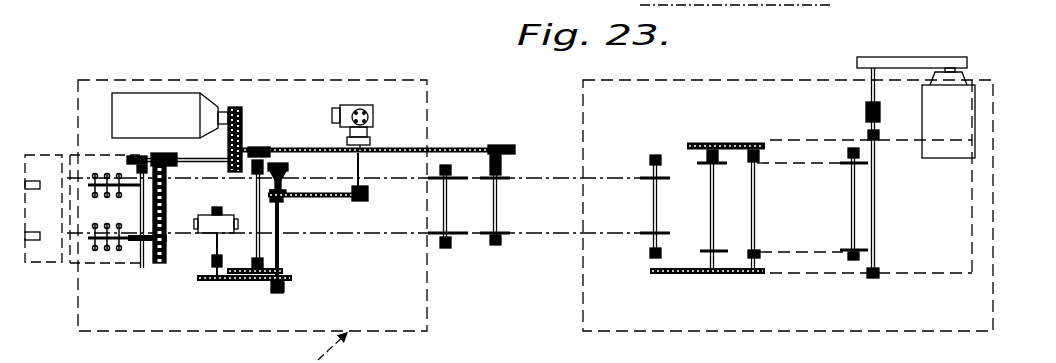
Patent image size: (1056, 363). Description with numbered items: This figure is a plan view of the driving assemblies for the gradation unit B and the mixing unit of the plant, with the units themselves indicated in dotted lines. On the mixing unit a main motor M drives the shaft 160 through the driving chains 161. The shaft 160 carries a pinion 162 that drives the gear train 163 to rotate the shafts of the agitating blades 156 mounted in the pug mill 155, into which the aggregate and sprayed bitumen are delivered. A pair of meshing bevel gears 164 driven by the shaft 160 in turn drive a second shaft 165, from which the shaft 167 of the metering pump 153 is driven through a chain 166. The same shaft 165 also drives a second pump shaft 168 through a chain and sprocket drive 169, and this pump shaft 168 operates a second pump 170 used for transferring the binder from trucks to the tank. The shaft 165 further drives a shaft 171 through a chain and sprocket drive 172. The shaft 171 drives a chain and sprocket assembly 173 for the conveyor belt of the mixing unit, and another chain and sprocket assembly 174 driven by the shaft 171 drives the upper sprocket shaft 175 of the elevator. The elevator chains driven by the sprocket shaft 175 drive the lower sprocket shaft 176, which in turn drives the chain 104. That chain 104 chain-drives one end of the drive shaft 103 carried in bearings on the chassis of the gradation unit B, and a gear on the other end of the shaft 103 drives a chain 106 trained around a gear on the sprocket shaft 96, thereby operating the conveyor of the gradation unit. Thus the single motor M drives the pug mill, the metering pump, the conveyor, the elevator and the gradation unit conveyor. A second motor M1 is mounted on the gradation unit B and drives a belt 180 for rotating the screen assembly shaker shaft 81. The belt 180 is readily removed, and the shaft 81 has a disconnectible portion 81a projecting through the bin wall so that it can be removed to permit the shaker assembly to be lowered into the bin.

The pug mill 155 is at (45, 157).
The agitating blades 156 is at (120, 252).
The chain and sprocket assembly 173 is at (135, 155).
The main motor M is at (172, 105).
The shaft 160 is at (221, 160).
The driving chains 161 is at (245, 130).
The pinion 162 is at (177, 165).
The gear train 163 is at (170, 238).
The metering pump 153 is at (216, 223).
The chain and sprocket drive 172 is at (232, 276).
The meshing bevel gears 164 is at (289, 168).
The second shaft 165 is at (283, 222).
The chain 166 is at (238, 285).
The shaft of the pump 167 is at (200, 266).
The shaft 171 is at (263, 248).
The second pump shaft 168 is at (363, 168).
The chain and sprocket drive 169 is at (342, 200).
The second pump 170 is at (374, 110).
The chain and sprocket assembly 174 is at (450, 147).
The upper sprocket shaft 175 is at (499, 213).
The lower sprocket shaft 176 is at (652, 212).
The chain 106 is at (725, 143).
The sprocket shaft 96 is at (711, 209).
The drive shaft 103 is at (755, 222).
The chain 104 is at (665, 277).
The screen assembly shaker shaft 81 is at (876, 213).
The disconnectible portion 81a is at (868, 84).
The belt 180 is at (900, 63).
The second motor M1 is at (968, 112).
The gradation unit B is at (806, 331).